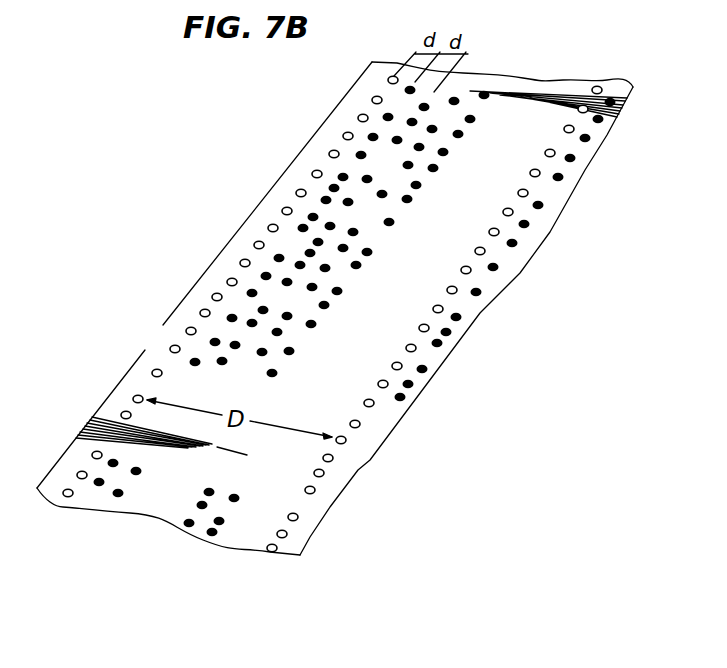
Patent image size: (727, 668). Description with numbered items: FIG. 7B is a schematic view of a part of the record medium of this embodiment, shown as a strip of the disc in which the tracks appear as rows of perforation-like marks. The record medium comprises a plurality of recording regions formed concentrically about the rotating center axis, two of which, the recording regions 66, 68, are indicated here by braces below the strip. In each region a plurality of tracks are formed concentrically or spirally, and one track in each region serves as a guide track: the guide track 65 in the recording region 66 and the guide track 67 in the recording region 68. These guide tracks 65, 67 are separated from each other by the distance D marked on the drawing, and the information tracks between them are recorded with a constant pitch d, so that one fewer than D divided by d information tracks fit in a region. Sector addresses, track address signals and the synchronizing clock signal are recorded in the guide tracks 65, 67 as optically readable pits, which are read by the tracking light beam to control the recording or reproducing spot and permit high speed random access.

The guide track 65 is at (316, 170).
The recording region 66 is at (234, 562).
The guide track 67 is at (513, 212).
The recording region 68 is at (375, 606).